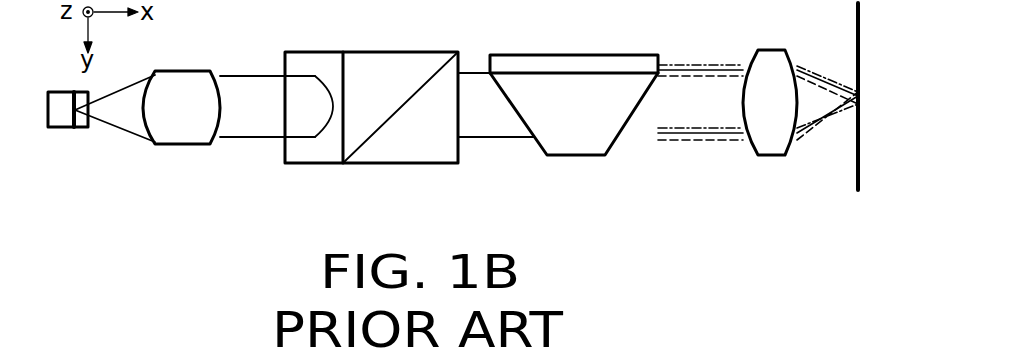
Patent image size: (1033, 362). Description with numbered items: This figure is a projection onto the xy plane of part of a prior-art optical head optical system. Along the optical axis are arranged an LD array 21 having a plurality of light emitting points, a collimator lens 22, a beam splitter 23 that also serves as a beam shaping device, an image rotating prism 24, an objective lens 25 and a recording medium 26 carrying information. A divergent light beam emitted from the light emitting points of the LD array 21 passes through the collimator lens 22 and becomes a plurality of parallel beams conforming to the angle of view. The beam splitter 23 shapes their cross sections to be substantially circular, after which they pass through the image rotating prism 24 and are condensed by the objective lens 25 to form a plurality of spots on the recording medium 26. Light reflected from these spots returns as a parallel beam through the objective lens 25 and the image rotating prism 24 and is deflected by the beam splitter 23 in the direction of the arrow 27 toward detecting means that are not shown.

The LD array 21 is at (63, 128).
The collimator lens 22 is at (190, 146).
The beam splitter 23 is at (308, 165).
The image rotating prism 24 is at (588, 157).
The objective lens 25 is at (772, 157).
The recording medium 26 is at (857, 24).
The arrow 27 is at (400, 170).